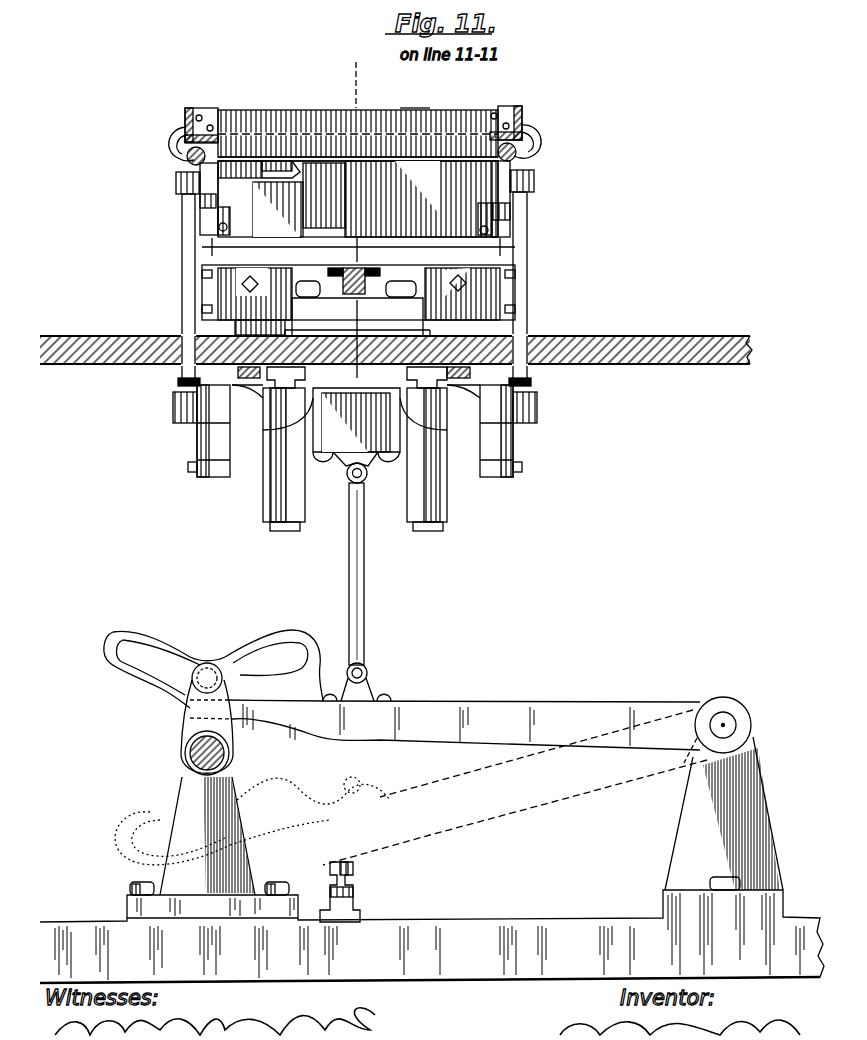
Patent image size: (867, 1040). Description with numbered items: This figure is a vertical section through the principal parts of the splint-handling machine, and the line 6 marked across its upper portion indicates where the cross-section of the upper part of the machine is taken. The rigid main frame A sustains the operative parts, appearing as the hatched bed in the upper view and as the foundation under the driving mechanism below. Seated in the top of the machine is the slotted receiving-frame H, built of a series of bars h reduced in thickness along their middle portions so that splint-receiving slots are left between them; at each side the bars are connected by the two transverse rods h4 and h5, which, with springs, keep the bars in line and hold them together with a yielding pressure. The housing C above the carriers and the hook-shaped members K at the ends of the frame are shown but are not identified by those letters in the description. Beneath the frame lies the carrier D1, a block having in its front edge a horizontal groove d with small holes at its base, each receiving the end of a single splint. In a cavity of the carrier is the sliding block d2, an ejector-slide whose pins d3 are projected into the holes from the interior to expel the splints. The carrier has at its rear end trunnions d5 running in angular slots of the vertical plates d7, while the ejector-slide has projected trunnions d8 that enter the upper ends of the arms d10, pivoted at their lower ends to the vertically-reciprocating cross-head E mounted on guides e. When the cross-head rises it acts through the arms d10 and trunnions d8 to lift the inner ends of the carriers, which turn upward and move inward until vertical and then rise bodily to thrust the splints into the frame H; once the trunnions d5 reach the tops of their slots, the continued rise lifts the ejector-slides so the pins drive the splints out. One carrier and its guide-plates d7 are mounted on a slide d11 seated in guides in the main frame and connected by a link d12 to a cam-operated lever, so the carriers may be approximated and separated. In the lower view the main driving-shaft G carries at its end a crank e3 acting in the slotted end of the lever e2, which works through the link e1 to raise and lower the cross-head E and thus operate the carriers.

The section line 6 is at (355, 212).
The casing C is at (358, 125).
The receiving-frame H is at (415, 98).
The frame bar h is at (190, 120).
The transverse rod h4 is at (199, 115).
The transverse rod h5 is at (210, 125).
The hook K is at (176, 130).
The carrier D1 is at (358, 199).
The horizontal groove d is at (228, 172).
The sliding block d2 is at (265, 170).
The pins d3 is at (240, 168).
The trunnions d8 is at (500, 188).
The trunnions d5 is at (544, 214).
The arms d10 is at (535, 300).
The vertical plates d7 is at (215, 250).
The link d12 is at (365, 268).
The slide d11 is at (357, 317).
The main frame A is at (432, 644).
The cross-head E is at (355, 425).
The guides e is at (305, 382).
The link e1 is at (364, 580).
The crank e3 is at (215, 680).
The lever e2 is at (470, 781).
The main driving-shaft G is at (232, 757).